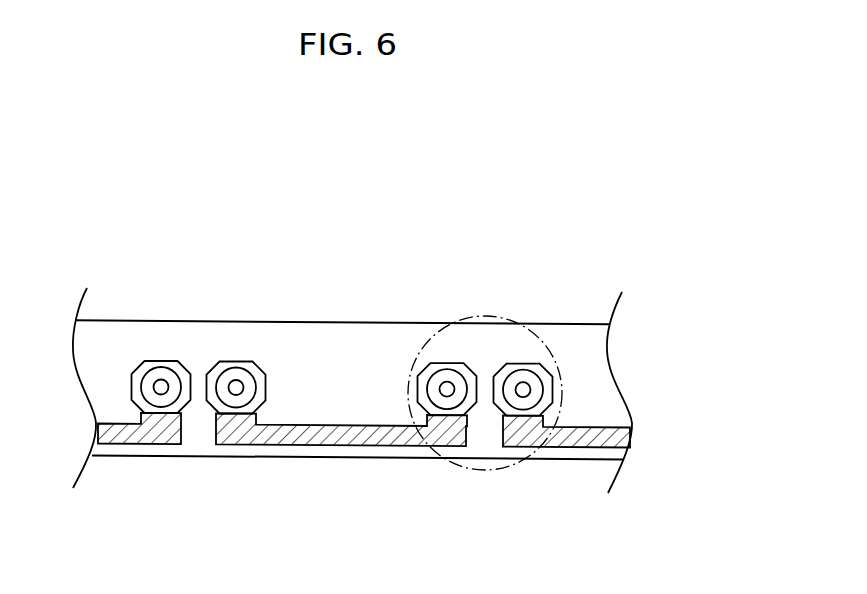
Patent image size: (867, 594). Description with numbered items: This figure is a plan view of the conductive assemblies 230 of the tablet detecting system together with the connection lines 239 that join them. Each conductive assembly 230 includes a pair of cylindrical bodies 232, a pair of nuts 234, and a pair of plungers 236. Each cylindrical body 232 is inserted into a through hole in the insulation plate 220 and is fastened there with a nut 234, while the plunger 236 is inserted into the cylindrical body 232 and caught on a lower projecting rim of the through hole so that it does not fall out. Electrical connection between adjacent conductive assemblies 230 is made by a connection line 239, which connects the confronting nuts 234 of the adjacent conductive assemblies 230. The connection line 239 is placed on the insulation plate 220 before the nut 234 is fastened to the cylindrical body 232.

The insulation plate 220 is at (568, 326).
The conductive assembly 230 is at (495, 317).
The cylindrical body 232 is at (237, 368).
The nut 234 is at (161, 361).
The plunger 236 is at (236, 388).
The connection line 239 is at (370, 445).